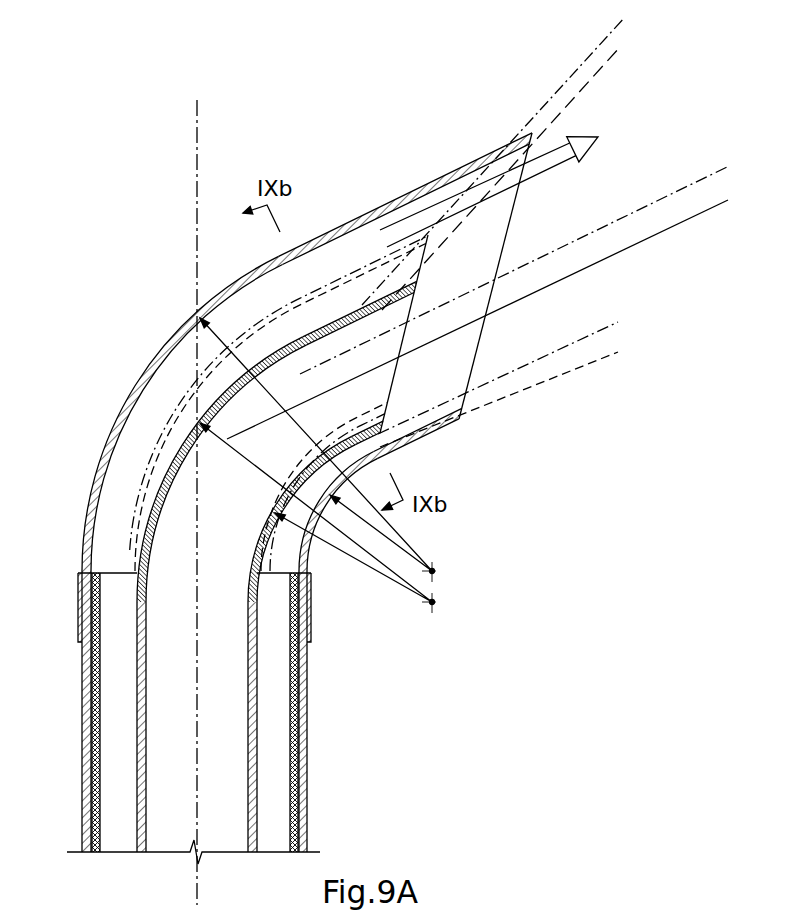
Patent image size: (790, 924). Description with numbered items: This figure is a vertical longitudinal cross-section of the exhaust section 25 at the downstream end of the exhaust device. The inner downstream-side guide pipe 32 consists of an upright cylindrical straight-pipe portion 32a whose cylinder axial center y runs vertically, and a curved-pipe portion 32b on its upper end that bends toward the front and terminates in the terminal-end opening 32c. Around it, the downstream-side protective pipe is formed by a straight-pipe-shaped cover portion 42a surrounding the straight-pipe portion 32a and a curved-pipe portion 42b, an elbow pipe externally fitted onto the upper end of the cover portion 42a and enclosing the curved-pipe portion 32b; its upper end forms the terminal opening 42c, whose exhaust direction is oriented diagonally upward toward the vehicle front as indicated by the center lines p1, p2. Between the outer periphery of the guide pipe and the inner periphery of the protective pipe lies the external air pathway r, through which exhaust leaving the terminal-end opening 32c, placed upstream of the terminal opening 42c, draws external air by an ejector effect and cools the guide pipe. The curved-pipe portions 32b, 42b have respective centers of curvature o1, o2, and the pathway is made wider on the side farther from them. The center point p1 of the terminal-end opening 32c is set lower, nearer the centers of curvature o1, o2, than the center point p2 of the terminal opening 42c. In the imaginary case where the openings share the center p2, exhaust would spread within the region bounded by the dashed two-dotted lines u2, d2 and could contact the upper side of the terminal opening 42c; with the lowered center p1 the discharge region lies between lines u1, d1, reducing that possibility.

The exhaust section 25 is at (111, 290).
The downstream-side guide pipe 32 is at (269, 543).
The straight-pipe portion 32a is at (137, 782).
The curved-pipe portion 32b is at (172, 458).
The terminal-end opening 32c is at (393, 397).
The straight-pipe-shaped cover portion 42a is at (86, 727).
The curved-pipe portion 42b is at (124, 399).
The terminal opening 42c is at (508, 222).
The external air pathway r is at (331, 262).
The cylinder axial center y is at (196, 488).
The center of curvature o1 is at (436, 602).
The center of curvature o2 is at (436, 571).
The upper dashed two-dotted line u1 is at (514, 168).
The upper dashed two-dotted line u2 is at (504, 152).
The center line p1 is at (491, 314).
The center line p2 is at (527, 266).
The lower dashed two-dotted line d1 is at (515, 393).
The lower dashed two-dotted line d2 is at (514, 372).